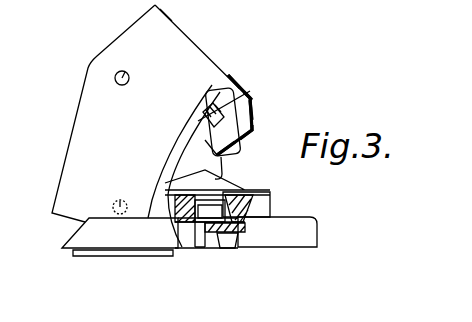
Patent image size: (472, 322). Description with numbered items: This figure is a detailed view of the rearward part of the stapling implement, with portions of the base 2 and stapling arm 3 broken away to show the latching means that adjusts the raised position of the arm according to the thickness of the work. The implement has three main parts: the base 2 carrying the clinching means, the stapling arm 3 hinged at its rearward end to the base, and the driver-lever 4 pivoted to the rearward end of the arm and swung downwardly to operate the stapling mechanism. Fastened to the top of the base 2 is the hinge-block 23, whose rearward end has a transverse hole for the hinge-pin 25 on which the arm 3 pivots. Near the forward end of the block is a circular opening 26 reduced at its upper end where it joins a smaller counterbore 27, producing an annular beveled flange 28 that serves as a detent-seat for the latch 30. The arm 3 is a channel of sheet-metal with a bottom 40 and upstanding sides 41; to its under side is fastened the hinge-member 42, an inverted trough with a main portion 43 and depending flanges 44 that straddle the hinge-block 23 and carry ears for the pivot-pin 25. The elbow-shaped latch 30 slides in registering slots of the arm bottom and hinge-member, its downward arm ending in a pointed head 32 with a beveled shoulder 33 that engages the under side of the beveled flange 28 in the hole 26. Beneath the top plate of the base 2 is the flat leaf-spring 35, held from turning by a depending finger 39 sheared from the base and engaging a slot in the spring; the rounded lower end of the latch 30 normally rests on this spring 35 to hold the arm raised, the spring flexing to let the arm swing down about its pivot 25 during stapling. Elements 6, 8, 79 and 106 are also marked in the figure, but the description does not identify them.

The base 2 is at (316, 228).
The stapling arm 3 is at (254, 100).
The driver-lever 4 is at (135, 24).
The base member 6 is at (73, 233).
The lower strip 8 is at (168, 252).
The hinge-block 23 is at (272, 192).
The hinge-pin 25 is at (120, 200).
The circular opening 26 is at (240, 193).
The counterbore 27 is at (173, 208).
The beveled flange 28 is at (226, 198).
The latch 30 is at (185, 130).
The pointed head 32 is at (203, 175).
The beveled shoulder 33 is at (218, 246).
The leaf-spring 35 is at (230, 155).
The finger 39 is at (180, 243).
The bottom 40 is at (245, 98).
The upstanding sides 41 is at (229, 83).
The hinge-member 42 is at (256, 132).
The main portion 43 is at (202, 107).
The flanges 44 is at (255, 118).
The hole 79 is at (124, 72).
The plate edge 106 is at (180, 31).